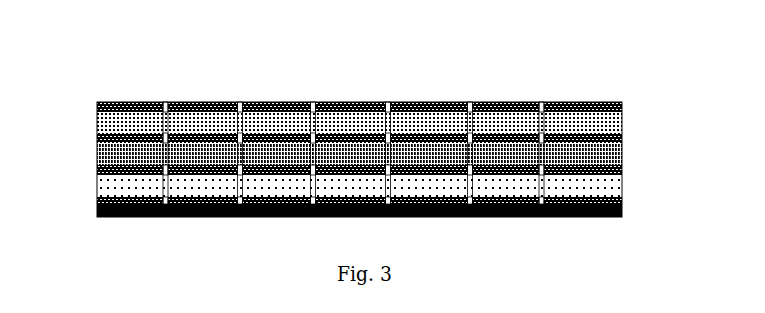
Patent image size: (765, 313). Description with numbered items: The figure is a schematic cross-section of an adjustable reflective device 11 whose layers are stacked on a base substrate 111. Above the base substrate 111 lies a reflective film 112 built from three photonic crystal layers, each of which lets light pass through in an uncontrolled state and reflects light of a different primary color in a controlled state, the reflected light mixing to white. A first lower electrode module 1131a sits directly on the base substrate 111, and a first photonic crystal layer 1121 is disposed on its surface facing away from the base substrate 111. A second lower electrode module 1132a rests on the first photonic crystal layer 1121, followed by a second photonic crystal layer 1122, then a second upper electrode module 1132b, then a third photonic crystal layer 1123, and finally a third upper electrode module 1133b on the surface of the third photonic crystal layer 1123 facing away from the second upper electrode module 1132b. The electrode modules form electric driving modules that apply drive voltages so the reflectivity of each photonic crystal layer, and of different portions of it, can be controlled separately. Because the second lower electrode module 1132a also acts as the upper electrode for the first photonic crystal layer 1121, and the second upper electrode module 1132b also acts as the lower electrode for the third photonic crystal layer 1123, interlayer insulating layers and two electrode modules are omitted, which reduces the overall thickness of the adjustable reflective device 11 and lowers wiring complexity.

The adjustable reflective device 11 is at (86, 46).
The base substrate 111 is at (95, 212).
The reflective film 112 is at (700, 108).
The first photonic crystal layer 1121 is at (622, 184).
The second photonic crystal layer 1122 is at (622, 153).
The third photonic crystal layer 1123 is at (622, 127).
The first lower electrode module 1131a is at (97, 202).
The second lower electrode module 1132a is at (97, 168).
The second upper electrode module 1132b is at (97, 138).
The third upper electrode module 1133b is at (97, 109).